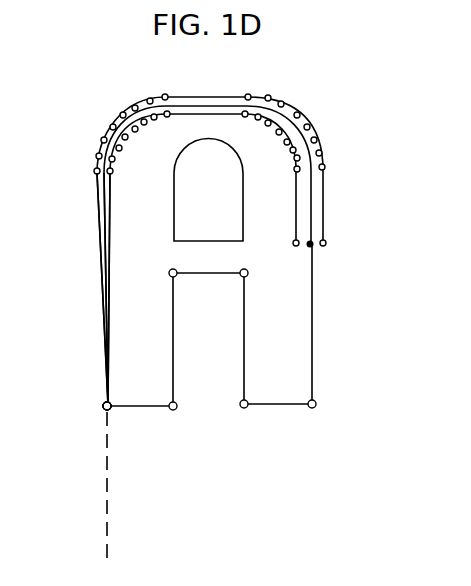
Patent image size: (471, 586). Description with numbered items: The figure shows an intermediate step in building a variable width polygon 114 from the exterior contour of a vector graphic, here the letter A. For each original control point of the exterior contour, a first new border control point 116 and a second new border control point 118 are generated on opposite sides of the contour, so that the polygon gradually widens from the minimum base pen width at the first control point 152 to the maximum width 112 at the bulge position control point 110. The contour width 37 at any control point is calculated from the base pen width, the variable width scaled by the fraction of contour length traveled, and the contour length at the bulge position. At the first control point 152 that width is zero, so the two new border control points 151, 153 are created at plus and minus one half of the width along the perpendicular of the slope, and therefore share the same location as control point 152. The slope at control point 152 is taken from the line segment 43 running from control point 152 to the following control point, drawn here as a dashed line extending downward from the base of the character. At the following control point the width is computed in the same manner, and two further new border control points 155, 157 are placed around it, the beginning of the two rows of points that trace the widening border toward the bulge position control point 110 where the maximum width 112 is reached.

The first new border control point 116 is at (111, 128).
The variable width polygon 114 is at (325, 180).
The second new border control point 118 is at (139, 131).
The bulge position control point 110 is at (325, 241).
The maximum width 112 is at (297, 245).
The new border control point 155 is at (97, 172).
The new border control point 157 is at (98, 190).
The contour width 37 is at (109, 268).
The new border control point 151 is at (104, 404).
The control point 152 is at (103, 406).
The new border control point 153 is at (105, 409).
The line segment 43 is at (108, 492).